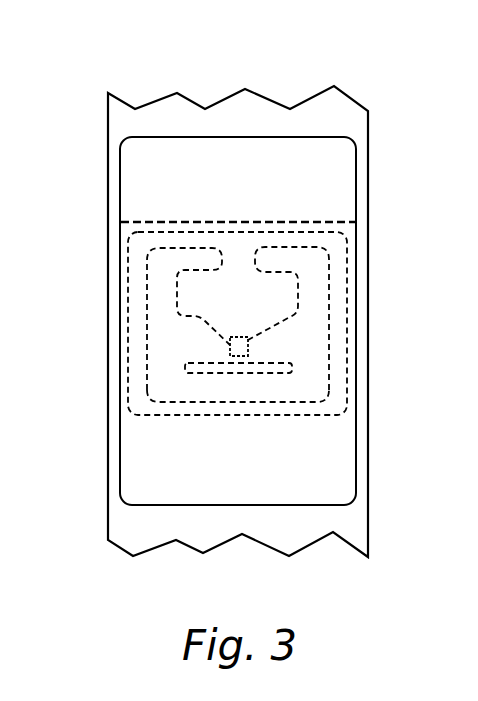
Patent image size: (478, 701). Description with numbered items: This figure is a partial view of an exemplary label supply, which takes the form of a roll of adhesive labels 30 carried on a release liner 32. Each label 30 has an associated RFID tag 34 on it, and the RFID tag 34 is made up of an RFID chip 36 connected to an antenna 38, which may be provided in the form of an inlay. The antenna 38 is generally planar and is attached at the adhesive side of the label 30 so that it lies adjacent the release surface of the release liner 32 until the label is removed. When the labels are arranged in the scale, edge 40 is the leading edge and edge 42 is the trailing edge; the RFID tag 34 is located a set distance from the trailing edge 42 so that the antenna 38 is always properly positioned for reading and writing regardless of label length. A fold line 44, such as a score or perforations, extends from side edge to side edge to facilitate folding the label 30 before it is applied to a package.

The adhesive label 30 is at (298, 183).
The release liner 32 is at (333, 118).
The RFID tag 34 is at (305, 285).
The RFID chip 36 is at (237, 337).
The antenna 38 is at (332, 340).
The leading edge 40 is at (190, 505).
The trailing edge 42 is at (243, 137).
The fold line 44 is at (162, 222).